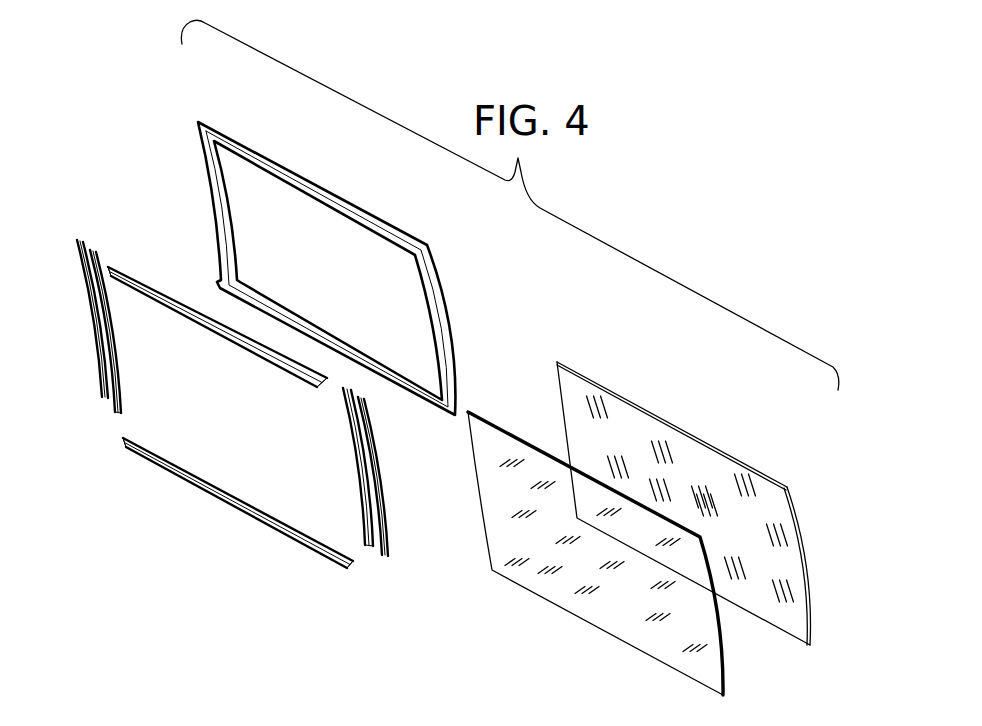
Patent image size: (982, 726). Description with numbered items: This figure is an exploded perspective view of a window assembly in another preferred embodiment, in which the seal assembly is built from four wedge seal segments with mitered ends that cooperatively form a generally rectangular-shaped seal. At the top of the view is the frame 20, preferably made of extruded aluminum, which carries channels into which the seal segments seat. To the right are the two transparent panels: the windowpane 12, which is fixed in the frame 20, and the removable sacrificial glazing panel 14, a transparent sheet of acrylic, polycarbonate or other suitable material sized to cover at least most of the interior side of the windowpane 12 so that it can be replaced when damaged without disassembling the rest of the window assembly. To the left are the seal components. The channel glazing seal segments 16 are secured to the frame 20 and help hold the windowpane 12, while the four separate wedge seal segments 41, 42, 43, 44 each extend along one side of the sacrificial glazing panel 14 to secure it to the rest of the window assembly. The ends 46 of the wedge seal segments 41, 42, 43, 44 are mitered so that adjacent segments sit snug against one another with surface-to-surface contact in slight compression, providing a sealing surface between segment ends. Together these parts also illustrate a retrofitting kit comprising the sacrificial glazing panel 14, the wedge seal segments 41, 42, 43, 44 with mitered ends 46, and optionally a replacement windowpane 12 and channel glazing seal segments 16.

The windowpane 12 is at (608, 390).
The sacrificial glazing panel 14 is at (478, 413).
The channel glazing seal segment 16 is at (172, 288).
The frame 20 is at (283, 165).
The wedge seal segment 41 is at (120, 383).
The wedge seal segment 42 is at (197, 320).
The wedge seal segment 43 is at (360, 488).
The wedge seal segment 44 is at (247, 500).
The mitered ends 46 is at (108, 270).